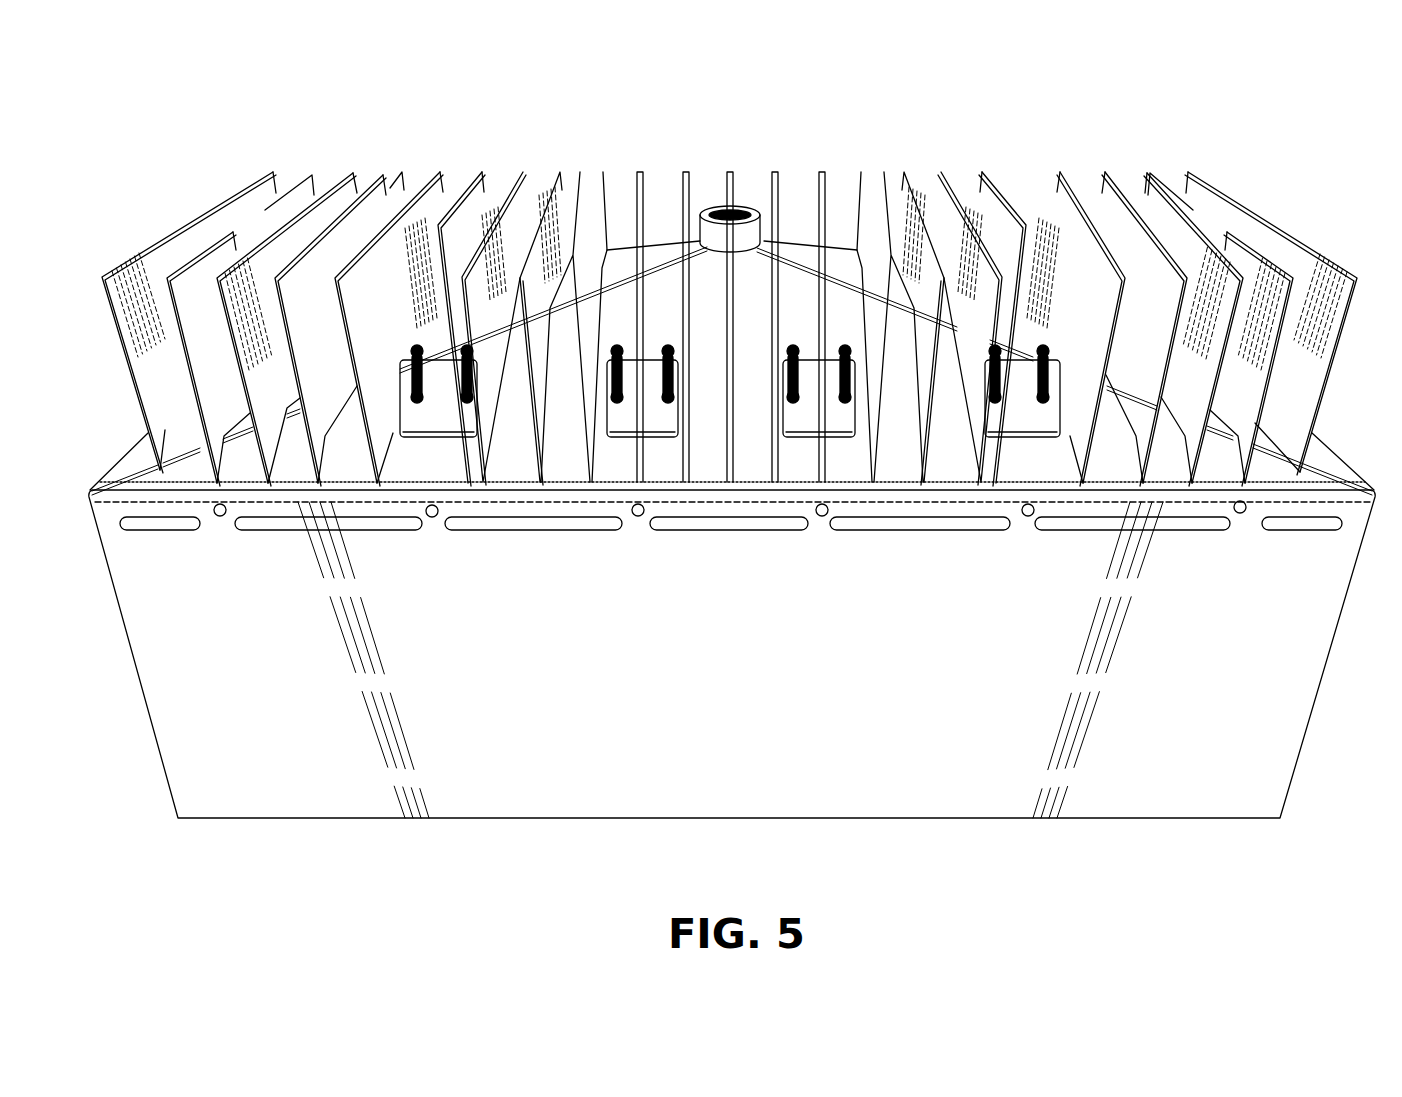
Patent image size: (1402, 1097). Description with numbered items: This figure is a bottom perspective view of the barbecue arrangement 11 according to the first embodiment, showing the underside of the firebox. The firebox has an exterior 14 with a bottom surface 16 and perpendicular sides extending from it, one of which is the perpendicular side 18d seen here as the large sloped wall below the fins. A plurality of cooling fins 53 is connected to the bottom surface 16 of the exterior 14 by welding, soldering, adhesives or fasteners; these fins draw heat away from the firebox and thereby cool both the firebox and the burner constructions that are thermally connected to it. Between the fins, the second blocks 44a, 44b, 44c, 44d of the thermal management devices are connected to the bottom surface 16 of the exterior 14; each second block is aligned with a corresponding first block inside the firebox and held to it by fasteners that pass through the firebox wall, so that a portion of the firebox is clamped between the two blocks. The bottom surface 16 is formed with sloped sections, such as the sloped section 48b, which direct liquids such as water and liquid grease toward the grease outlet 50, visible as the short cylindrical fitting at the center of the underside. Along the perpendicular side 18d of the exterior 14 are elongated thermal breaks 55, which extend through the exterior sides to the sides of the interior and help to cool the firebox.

The barbecue arrangement 11 is at (1283, 124).
The exterior 14 is at (1290, 686).
The bottom surface 16 is at (623, 146).
The perpendicular side 18d is at (991, 722).
The second block 44a is at (445, 415).
The second block 44b is at (648, 417).
The second block 44c is at (818, 418).
The second block 44d is at (1030, 418).
The sloped section 48b is at (797, 288).
The grease outlet 50 is at (740, 208).
The cooling fins 53 is at (193, 178).
The thermal breaks 55 is at (277, 537).